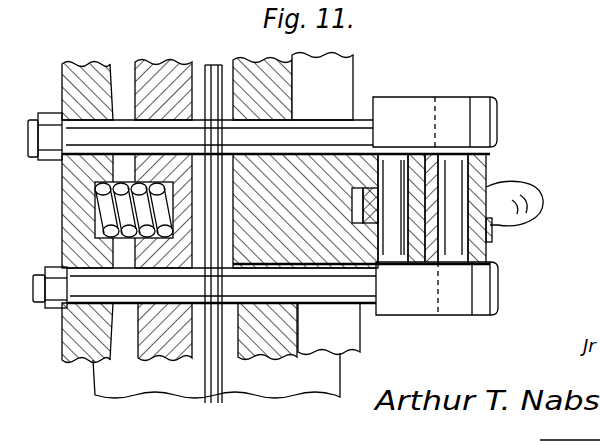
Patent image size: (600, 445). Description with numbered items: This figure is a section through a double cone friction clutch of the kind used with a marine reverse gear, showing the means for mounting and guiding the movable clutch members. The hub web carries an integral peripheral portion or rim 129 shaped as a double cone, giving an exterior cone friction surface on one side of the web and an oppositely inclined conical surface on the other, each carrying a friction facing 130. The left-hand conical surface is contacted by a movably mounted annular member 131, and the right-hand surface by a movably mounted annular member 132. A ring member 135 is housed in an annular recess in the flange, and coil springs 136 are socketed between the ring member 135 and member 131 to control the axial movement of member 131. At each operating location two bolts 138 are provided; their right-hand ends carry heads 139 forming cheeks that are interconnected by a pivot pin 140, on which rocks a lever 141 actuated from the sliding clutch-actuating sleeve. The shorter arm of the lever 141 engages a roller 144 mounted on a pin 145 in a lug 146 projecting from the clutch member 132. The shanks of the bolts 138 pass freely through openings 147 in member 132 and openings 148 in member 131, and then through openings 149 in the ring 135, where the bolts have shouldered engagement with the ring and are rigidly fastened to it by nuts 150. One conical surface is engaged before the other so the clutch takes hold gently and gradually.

The peripheral portion or rim 129 is at (220, 404).
The friction facing 130 is at (133, 383).
The annular member 131 is at (162, 74).
The annular member 132 is at (248, 74).
The ring member 135 is at (83, 74).
The coil springs 136 is at (104, 208).
The bolts 138 is at (340, 290).
The heads 139 is at (427, 303).
The pivot pin 140 is at (495, 204).
The lever 141 is at (484, 244).
The roller 144 is at (417, 199).
The pin 145 is at (391, 254).
The lug 146 is at (333, 243).
The openings 147 is at (278, 350).
The openings 148 is at (163, 359).
The openings 149 is at (90, 345).
The nuts 150 is at (53, 309).